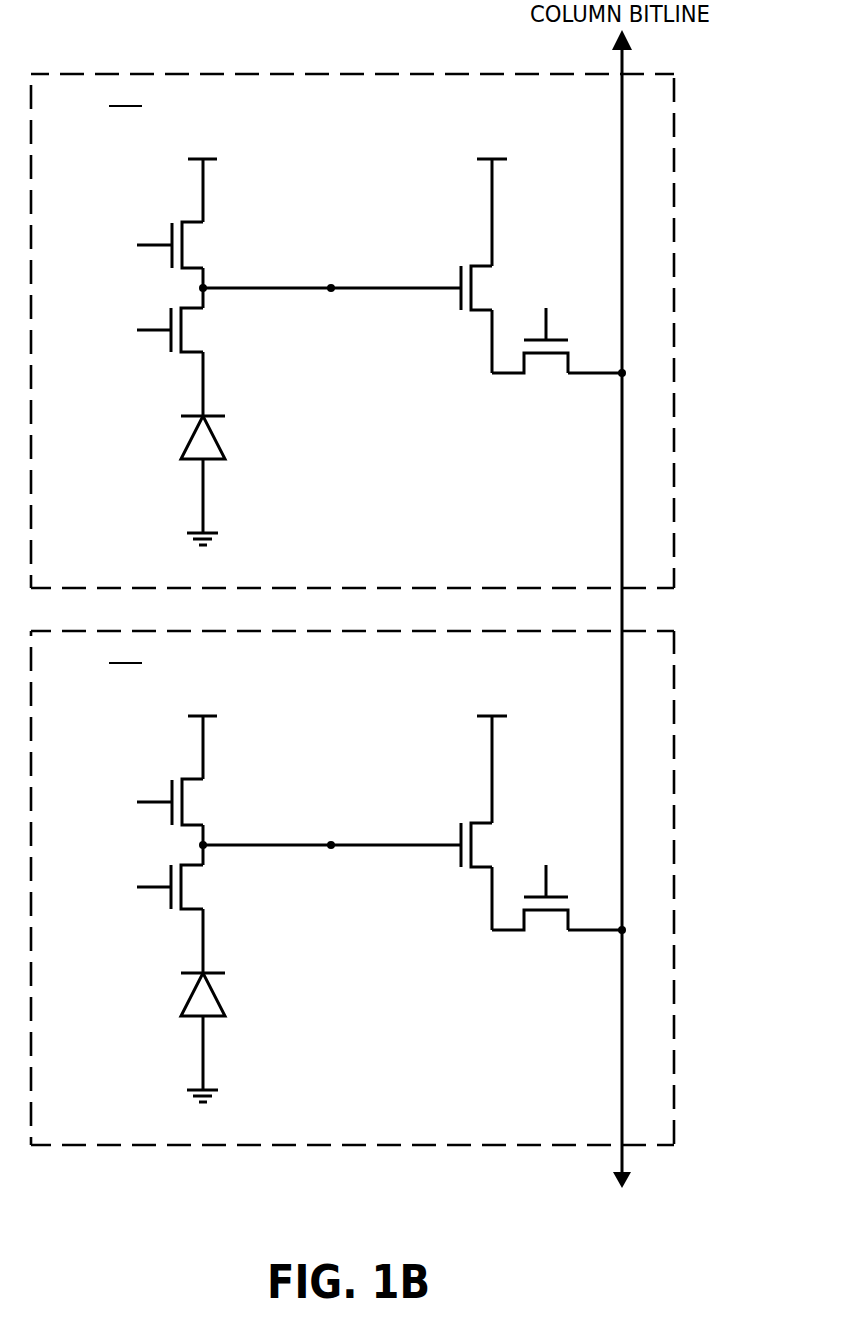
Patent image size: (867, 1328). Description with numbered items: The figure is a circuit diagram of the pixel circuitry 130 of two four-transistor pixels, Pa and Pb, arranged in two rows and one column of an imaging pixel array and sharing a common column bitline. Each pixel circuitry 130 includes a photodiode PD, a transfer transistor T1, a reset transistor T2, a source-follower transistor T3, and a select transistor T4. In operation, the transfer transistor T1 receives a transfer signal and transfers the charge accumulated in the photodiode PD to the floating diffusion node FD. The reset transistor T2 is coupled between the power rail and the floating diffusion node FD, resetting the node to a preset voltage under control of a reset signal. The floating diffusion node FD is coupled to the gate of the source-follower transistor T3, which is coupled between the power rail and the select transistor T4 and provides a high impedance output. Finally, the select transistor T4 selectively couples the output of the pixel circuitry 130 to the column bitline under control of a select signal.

The pixel circuitry 130 is at (674, 222).
The transfer transistor T1 is at (191, 630).
The reset transistor T2 is at (193, 533).
The source-follower transistor T3 is at (483, 598).
The select transistor T4 is at (530, 647).
The photodiode PD is at (182, 759).
The floating diffusion node FD is at (330, 550).